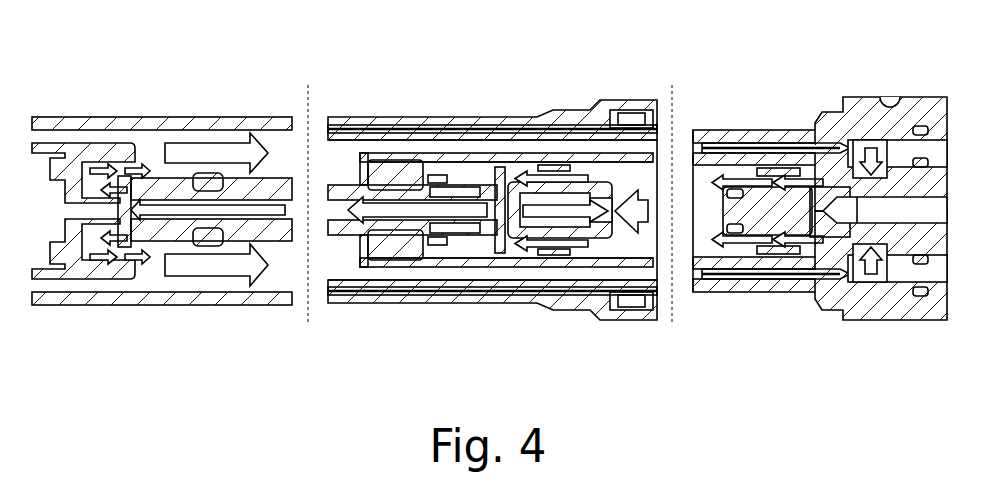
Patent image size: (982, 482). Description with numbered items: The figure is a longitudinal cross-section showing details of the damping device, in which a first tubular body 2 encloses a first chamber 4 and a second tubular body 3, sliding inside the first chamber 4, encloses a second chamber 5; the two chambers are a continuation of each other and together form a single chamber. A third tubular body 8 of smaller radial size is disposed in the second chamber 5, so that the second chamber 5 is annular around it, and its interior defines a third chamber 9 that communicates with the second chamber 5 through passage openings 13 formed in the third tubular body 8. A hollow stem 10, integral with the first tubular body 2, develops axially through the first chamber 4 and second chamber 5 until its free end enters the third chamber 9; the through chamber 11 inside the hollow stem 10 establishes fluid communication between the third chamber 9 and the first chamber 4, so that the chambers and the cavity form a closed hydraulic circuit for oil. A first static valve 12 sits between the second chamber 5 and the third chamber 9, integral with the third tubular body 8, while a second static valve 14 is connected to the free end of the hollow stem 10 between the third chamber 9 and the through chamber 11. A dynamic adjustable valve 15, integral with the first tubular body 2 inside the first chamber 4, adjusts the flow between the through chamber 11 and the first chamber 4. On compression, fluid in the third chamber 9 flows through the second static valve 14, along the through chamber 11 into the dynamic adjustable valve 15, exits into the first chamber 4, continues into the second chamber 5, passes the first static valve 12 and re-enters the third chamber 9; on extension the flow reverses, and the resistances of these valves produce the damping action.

The first tubular body 2 is at (116, 306).
The second tubular body 3 is at (533, 288).
The first chamber 4 is at (155, 143).
The second chamber 5 is at (345, 162).
The third tubular body 8 is at (515, 165).
The third chamber 9 is at (478, 170).
The hollow stem 10 is at (183, 230).
The through chamber 11 is at (277, 222).
The first static valve 12 is at (813, 218).
The passage openings 13 is at (880, 162).
The second static valve 14 is at (575, 187).
The dynamic adjustable valve 15 is at (98, 267).